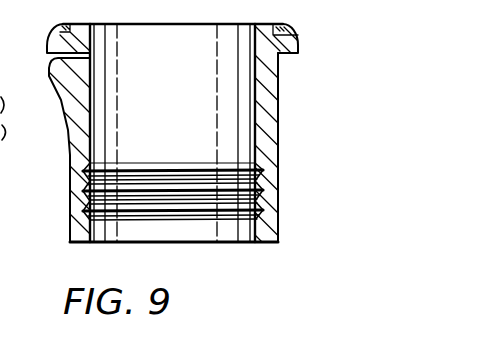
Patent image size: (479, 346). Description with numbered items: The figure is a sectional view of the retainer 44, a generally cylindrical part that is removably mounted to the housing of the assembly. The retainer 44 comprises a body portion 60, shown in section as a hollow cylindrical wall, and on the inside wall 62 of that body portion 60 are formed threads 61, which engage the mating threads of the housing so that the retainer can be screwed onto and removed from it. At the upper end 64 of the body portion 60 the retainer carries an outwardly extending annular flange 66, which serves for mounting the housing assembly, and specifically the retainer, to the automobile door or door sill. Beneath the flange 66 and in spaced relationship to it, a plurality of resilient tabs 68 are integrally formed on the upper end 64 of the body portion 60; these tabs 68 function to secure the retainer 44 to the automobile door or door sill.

The retainer 44 is at (76, 158).
The body portion 60 is at (278, 128).
The threads 61 is at (238, 163).
The inside wall 62 is at (100, 124).
The upper end 64 is at (278, 78).
The annular flange 66 is at (298, 44).
The resilient tabs 68 is at (48, 82).